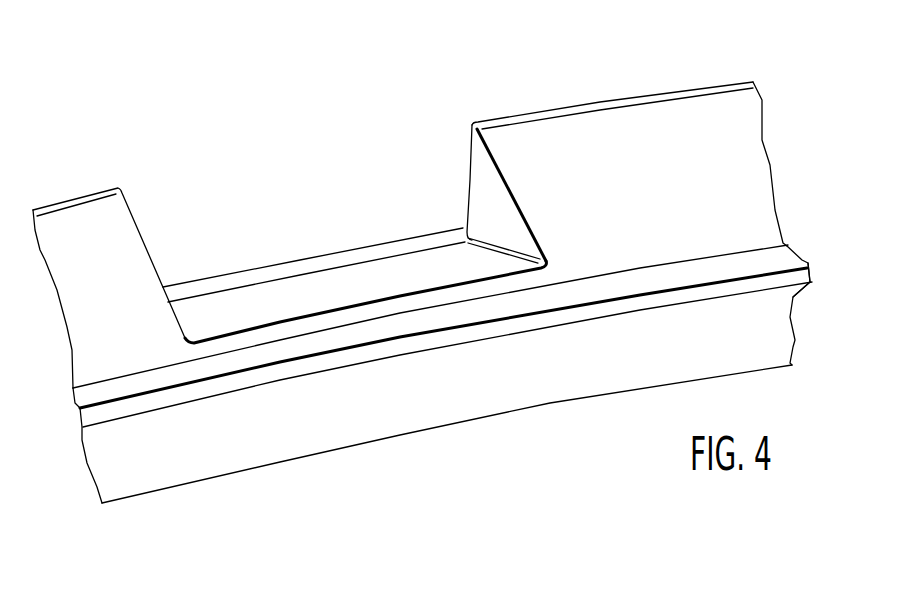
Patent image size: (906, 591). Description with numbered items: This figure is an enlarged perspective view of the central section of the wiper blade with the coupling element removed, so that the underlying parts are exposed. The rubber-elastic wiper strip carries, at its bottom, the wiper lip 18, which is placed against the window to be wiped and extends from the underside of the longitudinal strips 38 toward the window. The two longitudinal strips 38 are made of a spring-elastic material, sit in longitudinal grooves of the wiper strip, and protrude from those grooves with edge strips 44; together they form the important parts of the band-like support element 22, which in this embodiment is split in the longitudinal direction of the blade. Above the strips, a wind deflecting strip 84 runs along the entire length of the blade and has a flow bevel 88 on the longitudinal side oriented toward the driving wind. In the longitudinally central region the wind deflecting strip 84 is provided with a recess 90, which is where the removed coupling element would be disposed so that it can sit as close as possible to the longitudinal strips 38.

The wiper lip 18 is at (565, 388).
The support element 22 is at (793, 287).
The longitudinal strips 38 is at (403, 235).
The edge strips 44 is at (248, 280).
The wind deflecting strip 84 is at (540, 97).
The flow bevel 88 is at (523, 152).
The recess 90 is at (302, 212).